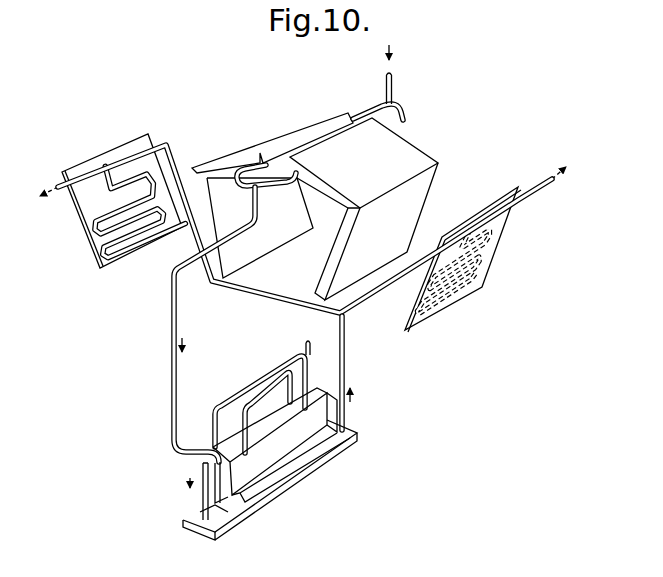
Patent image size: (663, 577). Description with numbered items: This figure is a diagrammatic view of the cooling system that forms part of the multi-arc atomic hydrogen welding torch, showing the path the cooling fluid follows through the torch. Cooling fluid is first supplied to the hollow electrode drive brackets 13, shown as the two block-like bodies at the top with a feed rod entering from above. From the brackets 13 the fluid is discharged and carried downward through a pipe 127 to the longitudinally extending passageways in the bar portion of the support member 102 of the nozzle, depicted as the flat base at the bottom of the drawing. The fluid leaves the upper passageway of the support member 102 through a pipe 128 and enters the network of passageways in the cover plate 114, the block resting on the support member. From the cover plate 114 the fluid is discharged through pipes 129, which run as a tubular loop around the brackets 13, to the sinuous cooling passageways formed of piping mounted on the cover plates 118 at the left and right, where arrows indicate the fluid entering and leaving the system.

The hollow electrode drive bracket 13 is at (317, 120).
The cover plate 118 is at (82, 233).
The pipe 129 is at (270, 302).
The pipe 127 is at (170, 387).
The cover plate 114 is at (342, 442).
The pipe 128 is at (197, 497).
The support member 102 is at (212, 518).